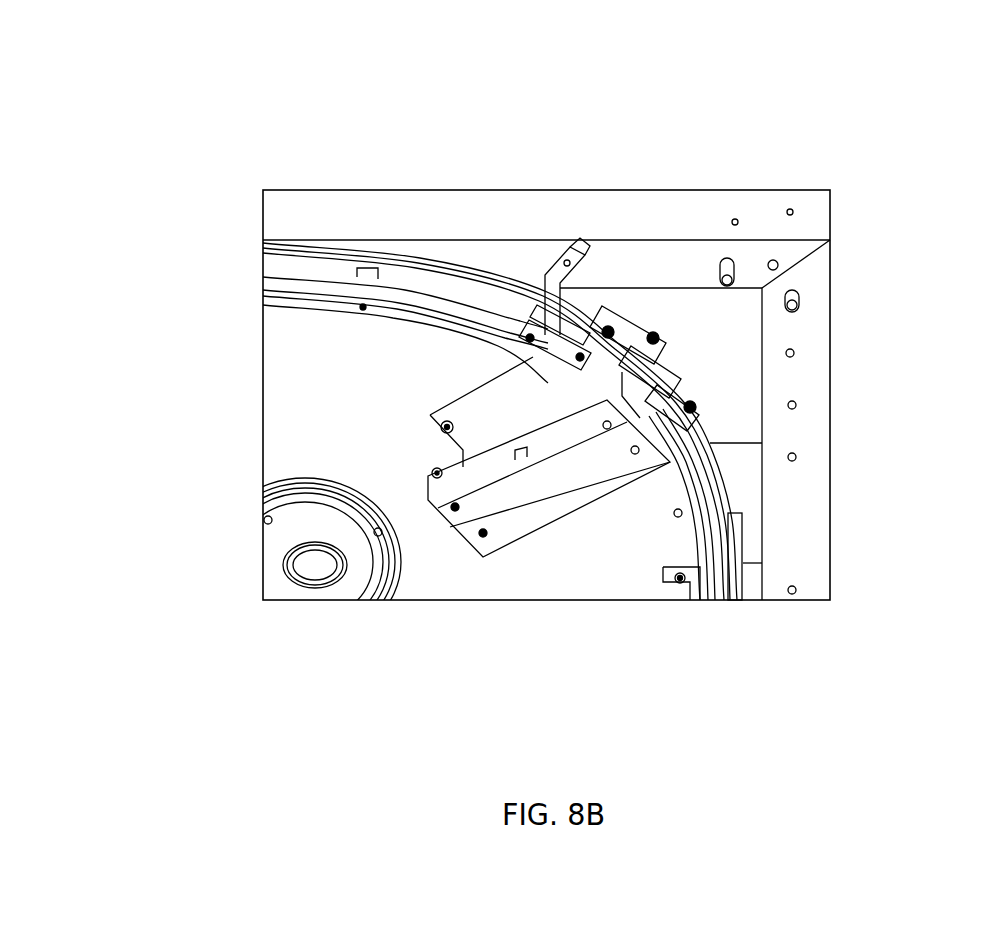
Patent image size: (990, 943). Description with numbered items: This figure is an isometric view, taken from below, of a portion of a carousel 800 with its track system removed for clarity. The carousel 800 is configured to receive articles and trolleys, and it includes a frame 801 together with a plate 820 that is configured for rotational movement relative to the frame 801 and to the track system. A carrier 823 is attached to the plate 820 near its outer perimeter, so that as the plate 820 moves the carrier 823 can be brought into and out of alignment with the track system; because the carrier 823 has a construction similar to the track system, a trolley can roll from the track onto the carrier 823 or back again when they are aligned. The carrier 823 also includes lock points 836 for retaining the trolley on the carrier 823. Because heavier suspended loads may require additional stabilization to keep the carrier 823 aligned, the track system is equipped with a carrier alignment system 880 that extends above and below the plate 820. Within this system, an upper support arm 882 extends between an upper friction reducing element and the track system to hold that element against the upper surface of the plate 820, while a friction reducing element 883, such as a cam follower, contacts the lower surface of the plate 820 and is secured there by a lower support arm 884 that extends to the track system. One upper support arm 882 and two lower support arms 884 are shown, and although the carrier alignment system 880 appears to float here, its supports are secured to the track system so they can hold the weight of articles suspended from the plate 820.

The carousel 800 is at (278, 152).
The frame 801 is at (824, 553).
The plate 820 is at (593, 568).
The carrier 823 is at (515, 525).
The lock points 836 is at (570, 503).
The carrier alignment system 880 is at (638, 316).
The upper support arm 882 is at (657, 352).
The friction reducing element 883 is at (672, 423).
The lower support arm 884 is at (675, 392).